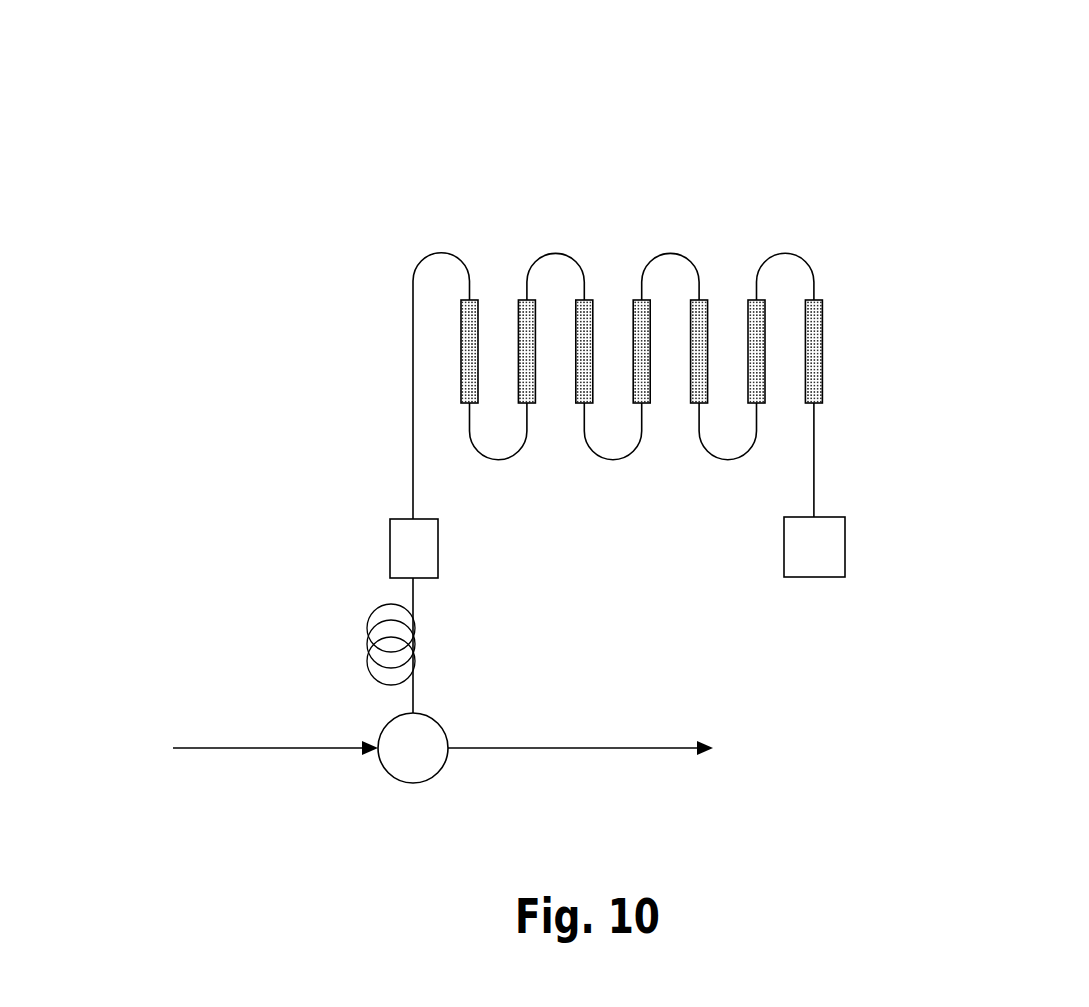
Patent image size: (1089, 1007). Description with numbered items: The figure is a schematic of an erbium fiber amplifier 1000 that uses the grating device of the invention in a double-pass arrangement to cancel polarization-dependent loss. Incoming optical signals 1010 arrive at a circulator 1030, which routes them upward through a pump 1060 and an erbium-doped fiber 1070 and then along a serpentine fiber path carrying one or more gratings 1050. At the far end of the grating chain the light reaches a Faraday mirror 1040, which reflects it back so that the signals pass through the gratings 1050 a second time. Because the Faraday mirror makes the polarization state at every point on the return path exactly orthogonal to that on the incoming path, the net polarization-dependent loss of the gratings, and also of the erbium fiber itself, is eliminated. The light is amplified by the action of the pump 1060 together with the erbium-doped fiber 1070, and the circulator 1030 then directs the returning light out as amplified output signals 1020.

The erbium fiber amplifier 1000 is at (1032, 87).
The incoming optical signals 1010 is at (228, 749).
The amplified output signals 1020 is at (623, 747).
The circulator 1030 is at (440, 772).
The Faraday mirror 1040 is at (845, 565).
The gratings 1050 is at (823, 336).
The pump 1060 is at (402, 519).
The erbium-doped fiber 1070 is at (415, 639).